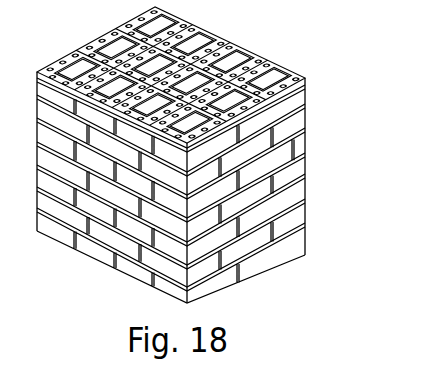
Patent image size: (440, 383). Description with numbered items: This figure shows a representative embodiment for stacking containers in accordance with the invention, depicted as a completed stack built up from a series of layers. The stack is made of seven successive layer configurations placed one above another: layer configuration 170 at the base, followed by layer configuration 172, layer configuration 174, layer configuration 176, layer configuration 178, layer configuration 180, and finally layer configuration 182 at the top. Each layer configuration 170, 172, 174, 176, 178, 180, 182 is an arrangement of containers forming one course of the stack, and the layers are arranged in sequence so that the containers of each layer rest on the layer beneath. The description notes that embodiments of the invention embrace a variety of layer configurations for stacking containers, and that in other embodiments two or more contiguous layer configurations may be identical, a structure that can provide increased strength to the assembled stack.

The layer configuration 170 is at (305, 225).
The layer configuration 172 is at (305, 205).
The layer configuration 174 is at (305, 178).
The layer configuration 176 is at (305, 157).
The layer configuration 178 is at (305, 134).
The layer configuration 180 is at (305, 112).
The layer configuration 182 is at (305, 89).